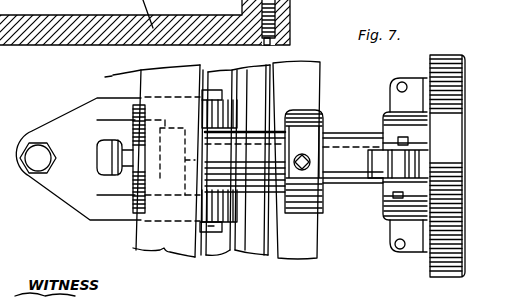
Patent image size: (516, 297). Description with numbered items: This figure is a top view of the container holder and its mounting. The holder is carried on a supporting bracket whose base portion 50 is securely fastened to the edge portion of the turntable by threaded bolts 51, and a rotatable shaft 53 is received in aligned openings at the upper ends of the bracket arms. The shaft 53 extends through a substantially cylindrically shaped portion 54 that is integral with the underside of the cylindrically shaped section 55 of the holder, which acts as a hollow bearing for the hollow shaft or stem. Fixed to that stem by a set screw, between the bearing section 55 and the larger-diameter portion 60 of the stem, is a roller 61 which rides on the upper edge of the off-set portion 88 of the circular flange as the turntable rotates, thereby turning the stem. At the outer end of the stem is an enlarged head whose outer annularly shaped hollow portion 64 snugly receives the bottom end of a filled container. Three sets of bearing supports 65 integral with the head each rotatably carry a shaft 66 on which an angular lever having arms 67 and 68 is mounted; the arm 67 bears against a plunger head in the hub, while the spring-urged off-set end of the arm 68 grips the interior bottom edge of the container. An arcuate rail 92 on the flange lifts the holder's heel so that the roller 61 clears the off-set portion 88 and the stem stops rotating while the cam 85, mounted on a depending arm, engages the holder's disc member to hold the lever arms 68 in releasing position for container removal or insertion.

The base portion 50 is at (70, 122).
The threaded bolts 51 is at (96, 158).
The rotatable shaft 53 is at (210, 233).
The cylindrically shaped portion 54 is at (230, 128).
The cylindrically shaped section 55 is at (245, 162).
The portion of the shaft 60 is at (353, 158).
The roller 61 is at (323, 139).
The annularly shaped hollow portion 64 is at (447, 166).
The bearing supports 65 is at (398, 146).
The shaft 66 is at (401, 82).
The lever arm 67 is at (388, 165).
The lever arm 68 is at (417, 168).
The cam 85 is at (166, 247).
The off-set portion 88 is at (292, 255).
The rail 92 is at (251, 247).